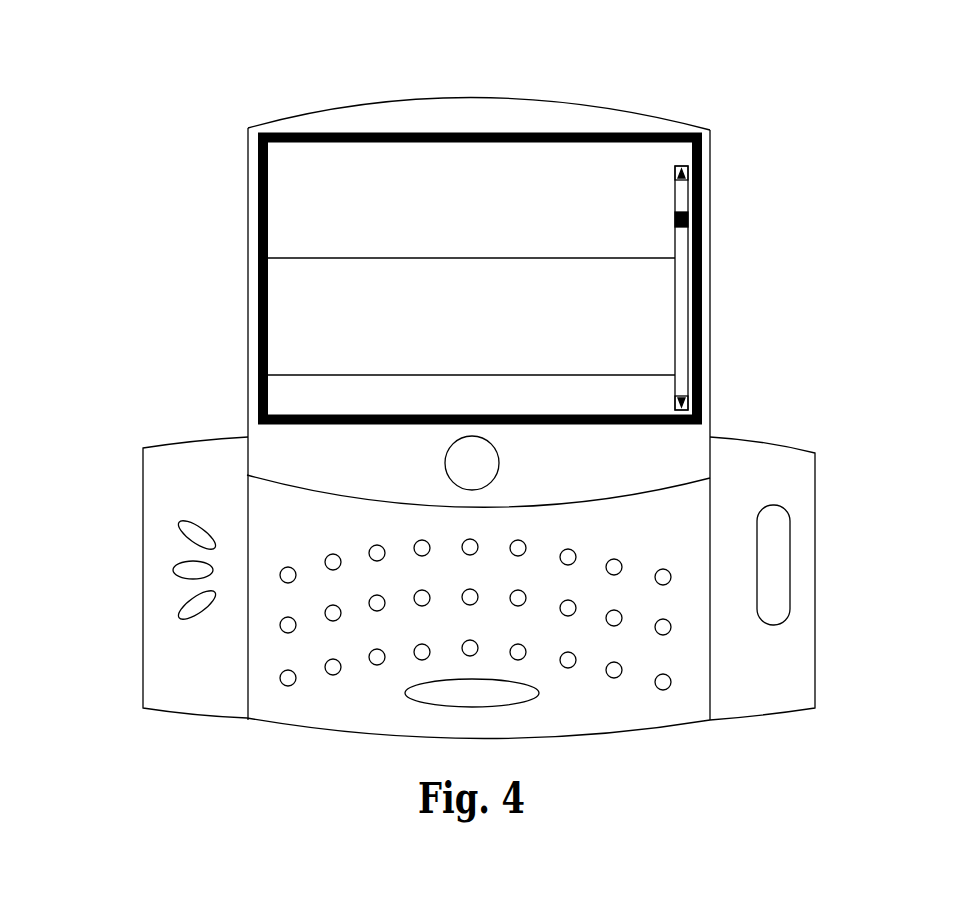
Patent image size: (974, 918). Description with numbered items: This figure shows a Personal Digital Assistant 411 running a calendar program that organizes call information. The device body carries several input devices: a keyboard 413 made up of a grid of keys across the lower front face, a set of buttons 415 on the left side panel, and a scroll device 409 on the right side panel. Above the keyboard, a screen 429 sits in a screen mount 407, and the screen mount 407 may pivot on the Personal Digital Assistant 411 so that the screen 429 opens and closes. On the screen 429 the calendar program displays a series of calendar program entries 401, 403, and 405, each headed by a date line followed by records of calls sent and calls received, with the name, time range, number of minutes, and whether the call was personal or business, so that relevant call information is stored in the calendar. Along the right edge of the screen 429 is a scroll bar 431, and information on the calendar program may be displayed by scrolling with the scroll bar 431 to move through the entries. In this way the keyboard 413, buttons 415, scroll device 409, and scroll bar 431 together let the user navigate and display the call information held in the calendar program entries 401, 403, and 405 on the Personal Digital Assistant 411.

The calendar program entry 401 is at (554, 242).
The calendar program entry 403 is at (652, 312).
The calendar program entry 405 is at (645, 395).
The screen mount 407 is at (507, 127).
The scroll device 409 is at (772, 533).
The Personal Digital Assistant 411 is at (777, 650).
The keyboard 413 is at (555, 630).
The buttons 415 is at (183, 532).
The screen 429 is at (677, 263).
The scroll bar 431 is at (680, 197).